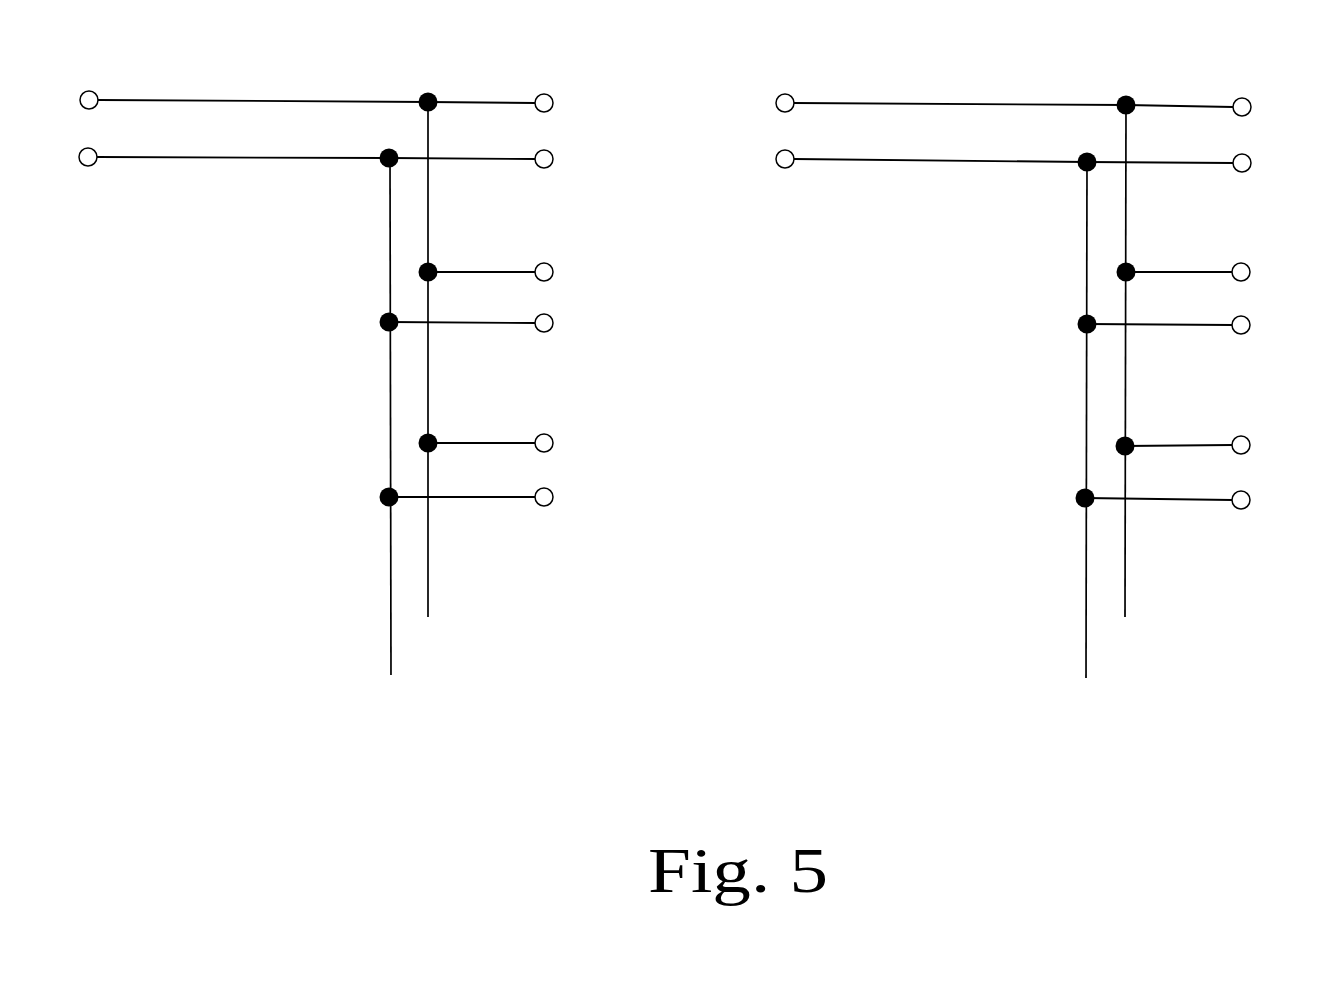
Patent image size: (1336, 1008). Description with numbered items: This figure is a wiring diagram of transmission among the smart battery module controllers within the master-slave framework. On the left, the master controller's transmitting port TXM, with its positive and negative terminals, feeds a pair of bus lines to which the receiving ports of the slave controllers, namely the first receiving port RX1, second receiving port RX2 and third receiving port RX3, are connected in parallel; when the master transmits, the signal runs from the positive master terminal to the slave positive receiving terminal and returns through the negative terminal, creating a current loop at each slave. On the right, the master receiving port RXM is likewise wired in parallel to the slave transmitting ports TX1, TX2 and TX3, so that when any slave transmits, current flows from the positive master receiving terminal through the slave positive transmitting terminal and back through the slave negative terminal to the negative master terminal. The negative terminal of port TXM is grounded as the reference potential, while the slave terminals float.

The master transmitting port TxM+/TxM- TXM is at (253, 110).
The first slave receiving port Rx+/Rx- RX1 is at (500, 121).
The second slave receiving port Rx+/Rx- RX2 is at (500, 295).
The third slave receiving port Rx+/Rx- RX3 is at (501, 471).
The master receiving port RxM+/RxM- RXM is at (951, 116).
The first slave transmitting port Tx+/Tx- TX1 is at (1198, 127).
The second slave transmitting port Tx+/Tx- TX2 is at (1198, 297).
The third slave transmitting port Tx+/Tx- TX3 is at (1198, 477).